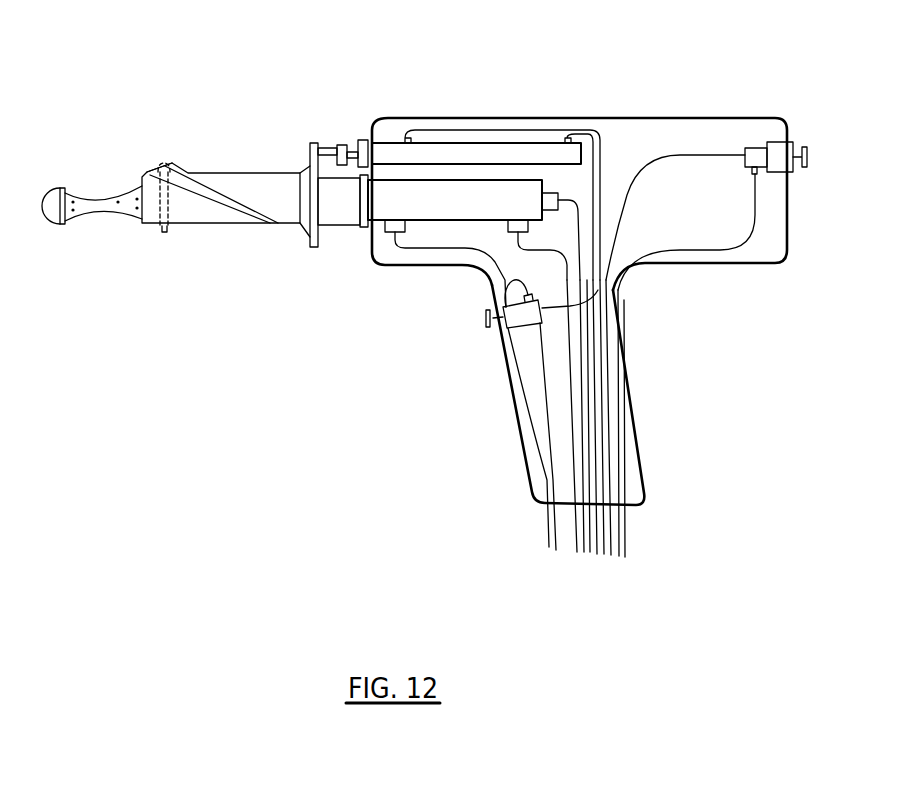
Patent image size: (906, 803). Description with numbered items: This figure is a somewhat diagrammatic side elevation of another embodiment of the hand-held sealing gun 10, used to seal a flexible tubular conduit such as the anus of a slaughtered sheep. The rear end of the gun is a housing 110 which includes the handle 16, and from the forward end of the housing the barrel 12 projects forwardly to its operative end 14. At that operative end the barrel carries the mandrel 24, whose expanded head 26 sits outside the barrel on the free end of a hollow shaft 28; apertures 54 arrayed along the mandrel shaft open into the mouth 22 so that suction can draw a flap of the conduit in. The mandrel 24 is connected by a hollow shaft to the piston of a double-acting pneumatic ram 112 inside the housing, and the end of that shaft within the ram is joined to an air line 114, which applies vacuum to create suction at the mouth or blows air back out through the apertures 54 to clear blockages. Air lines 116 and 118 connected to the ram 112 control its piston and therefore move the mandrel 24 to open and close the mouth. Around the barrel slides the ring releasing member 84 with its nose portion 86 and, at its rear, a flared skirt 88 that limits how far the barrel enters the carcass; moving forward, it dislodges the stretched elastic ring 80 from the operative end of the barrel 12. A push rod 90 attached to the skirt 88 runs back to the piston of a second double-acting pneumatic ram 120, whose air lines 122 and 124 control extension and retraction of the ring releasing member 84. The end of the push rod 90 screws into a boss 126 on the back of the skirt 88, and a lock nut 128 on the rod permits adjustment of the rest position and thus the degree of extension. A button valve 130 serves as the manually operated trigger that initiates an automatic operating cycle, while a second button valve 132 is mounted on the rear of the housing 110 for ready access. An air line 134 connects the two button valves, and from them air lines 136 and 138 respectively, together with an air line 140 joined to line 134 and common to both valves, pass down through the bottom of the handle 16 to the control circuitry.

The sealing gun 10 is at (543, 69).
The barrel 12 is at (223, 224).
The operative end 14 is at (137, 219).
The handle 16 is at (633, 423).
The mouth 22 is at (100, 216).
The mandrel 24 is at (62, 187).
The expanded head 26 is at (52, 212).
The shaft 28 is at (96, 197).
The apertures 54 is at (130, 193).
The elastic ring 80 is at (165, 232).
The ring releasing member 84 is at (243, 173).
The nose portion 86 is at (146, 171).
The flared skirt 88 is at (310, 177).
The push rod 90 is at (362, 140).
The housing 110 is at (648, 117).
The double-acting pneumatic ram 112 is at (474, 243).
The air line 114 is at (585, 327).
The air line 116 is at (572, 413).
The air line 118 is at (580, 455).
The second double-acting pneumatic ram 120 is at (455, 143).
The air line 122 is at (597, 367).
The air line 124 is at (595, 377).
The boss 126 is at (327, 147).
The lock nut 128 is at (340, 145).
The button valve 130 is at (503, 303).
The second button valve 132 is at (792, 142).
The air line 134 is at (637, 188).
The air line 136 is at (527, 363).
The air line 138 is at (620, 472).
The air line 140 is at (550, 380).